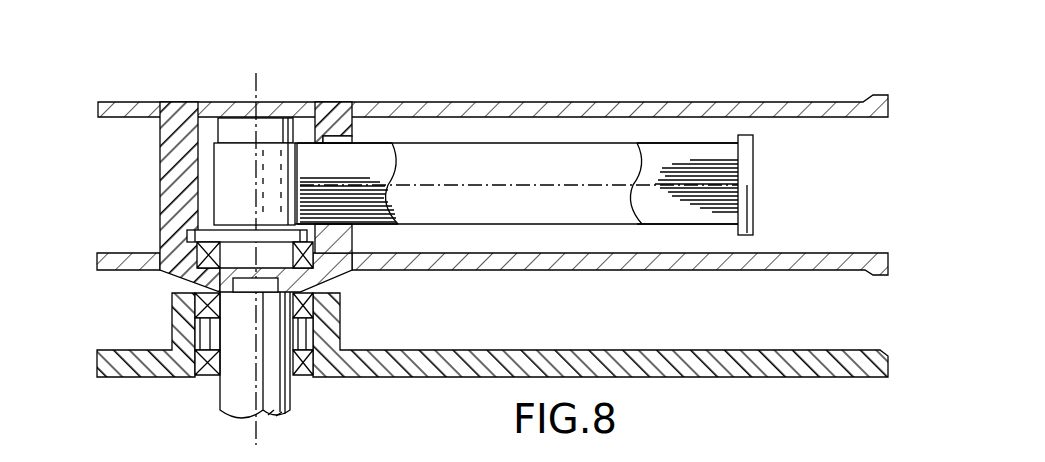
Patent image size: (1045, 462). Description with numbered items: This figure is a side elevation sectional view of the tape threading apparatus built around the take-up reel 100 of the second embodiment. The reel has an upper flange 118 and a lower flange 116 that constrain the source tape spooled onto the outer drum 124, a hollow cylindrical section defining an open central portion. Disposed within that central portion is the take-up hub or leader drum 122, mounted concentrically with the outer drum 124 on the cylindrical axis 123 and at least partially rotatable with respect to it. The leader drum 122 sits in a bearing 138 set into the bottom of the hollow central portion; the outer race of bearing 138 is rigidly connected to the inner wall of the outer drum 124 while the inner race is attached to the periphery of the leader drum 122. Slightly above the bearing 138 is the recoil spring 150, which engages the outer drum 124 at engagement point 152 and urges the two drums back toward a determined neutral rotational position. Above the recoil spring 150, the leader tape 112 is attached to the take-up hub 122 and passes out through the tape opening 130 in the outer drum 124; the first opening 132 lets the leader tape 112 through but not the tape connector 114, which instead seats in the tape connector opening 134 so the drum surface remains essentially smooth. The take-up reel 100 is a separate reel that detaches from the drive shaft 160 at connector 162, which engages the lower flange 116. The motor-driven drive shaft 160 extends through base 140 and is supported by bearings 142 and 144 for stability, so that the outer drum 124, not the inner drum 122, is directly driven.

The take-up reel 100 is at (686, 50).
The leader tape 112 is at (640, 158).
The tape connector 114 is at (756, 172).
The lower flange 116 is at (812, 270).
The upper flange 118 is at (550, 101).
The take-up hub 122 is at (233, 130).
The cylindrical axis 123 is at (257, 85).
The outer drum 124 is at (160, 146).
The tape opening 130 is at (366, 237).
The first opening 132 is at (317, 143).
The tape connector opening 134 is at (352, 140).
The bearing 138 is at (335, 271).
The base 140 is at (523, 350).
The bearing 142 is at (305, 378).
The bearing 144 is at (302, 318).
The recoil spring 150 is at (235, 230).
The engagement point 152 is at (196, 235).
The drive shaft 160 is at (218, 398).
The connector 162 is at (215, 285).